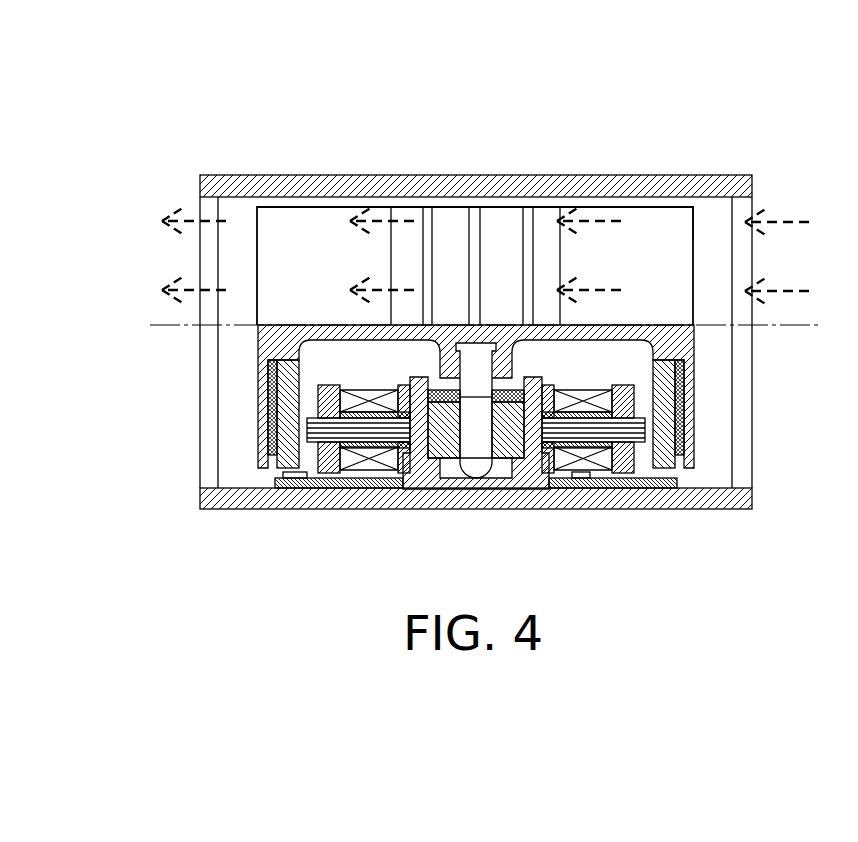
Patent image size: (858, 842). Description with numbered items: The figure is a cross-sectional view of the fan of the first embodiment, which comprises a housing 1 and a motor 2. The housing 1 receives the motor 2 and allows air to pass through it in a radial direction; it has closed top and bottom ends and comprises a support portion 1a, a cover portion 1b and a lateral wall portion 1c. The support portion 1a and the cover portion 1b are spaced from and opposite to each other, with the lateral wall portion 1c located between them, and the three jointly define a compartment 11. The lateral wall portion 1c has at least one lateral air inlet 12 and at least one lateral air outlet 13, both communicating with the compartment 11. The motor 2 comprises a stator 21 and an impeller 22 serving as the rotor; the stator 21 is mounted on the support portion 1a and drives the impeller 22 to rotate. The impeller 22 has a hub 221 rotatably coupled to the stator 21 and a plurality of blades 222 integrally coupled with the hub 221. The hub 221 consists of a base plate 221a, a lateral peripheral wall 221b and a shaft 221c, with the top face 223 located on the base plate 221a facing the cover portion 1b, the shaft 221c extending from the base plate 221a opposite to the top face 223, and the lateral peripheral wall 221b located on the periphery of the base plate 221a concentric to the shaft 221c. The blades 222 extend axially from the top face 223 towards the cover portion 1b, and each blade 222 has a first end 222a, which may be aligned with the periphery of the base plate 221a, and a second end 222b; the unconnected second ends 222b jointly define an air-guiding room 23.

The housing 1 is at (470, 329).
The support portion 1a is at (238, 500).
The cover portion 1b is at (207, 175).
The lateral wall portion 1c is at (200, 393).
The compartment 11 is at (727, 388).
The lateral air inlet 12 is at (760, 270).
The lateral air outlet 13 is at (188, 258).
The motor 2 is at (710, 222).
The stator 21 is at (622, 465).
The impeller 22 is at (218, 92).
The hub 221 is at (258, 358).
The base plate 221a is at (647, 333).
The lateral peripheral wall 221b is at (690, 420).
The shaft 221c is at (477, 465).
The blades 222 is at (321, 207).
The first end 222a is at (695, 207).
The second end 222b is at (560, 207).
The top face 223 is at (281, 350).
The air-guiding room 23 is at (489, 222).